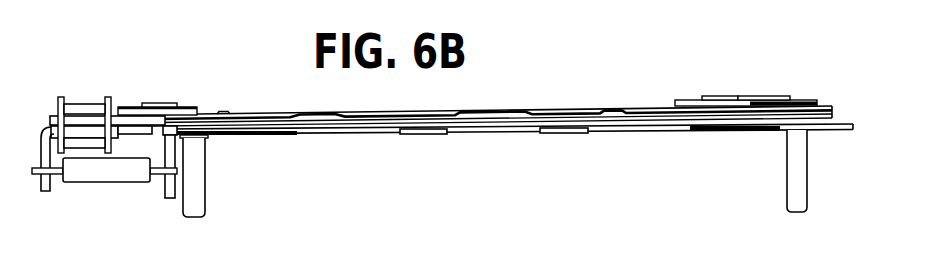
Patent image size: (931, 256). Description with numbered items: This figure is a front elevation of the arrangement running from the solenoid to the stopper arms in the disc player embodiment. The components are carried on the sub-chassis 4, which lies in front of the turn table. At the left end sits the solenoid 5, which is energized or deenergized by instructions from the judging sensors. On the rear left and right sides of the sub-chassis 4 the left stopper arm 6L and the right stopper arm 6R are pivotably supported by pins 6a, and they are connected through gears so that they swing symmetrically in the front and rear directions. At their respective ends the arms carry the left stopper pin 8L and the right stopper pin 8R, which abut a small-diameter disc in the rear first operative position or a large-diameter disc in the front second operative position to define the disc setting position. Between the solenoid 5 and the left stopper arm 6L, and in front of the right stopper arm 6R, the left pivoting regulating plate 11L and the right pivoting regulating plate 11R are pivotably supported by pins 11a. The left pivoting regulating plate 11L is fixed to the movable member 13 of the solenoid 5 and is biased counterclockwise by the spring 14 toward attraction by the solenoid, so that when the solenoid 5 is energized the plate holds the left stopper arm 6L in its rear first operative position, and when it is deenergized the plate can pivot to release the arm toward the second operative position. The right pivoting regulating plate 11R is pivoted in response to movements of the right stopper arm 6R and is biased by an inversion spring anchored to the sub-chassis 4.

The sub-chassis 4 is at (832, 108).
The solenoid 5 is at (83, 110).
The left stopper arm 6L is at (326, 128).
The right stopper arm 6R is at (635, 130).
The pin 6a is at (432, 135).
The left stopper pin 8L is at (196, 162).
The right stopper pin 8R is at (797, 173).
The left pivoting regulating plate 11L is at (133, 107).
The right pivoting regulating plate 11R is at (687, 100).
The pin 11a is at (172, 103).
The movable member 13 is at (138, 133).
The spring 14 is at (84, 173).